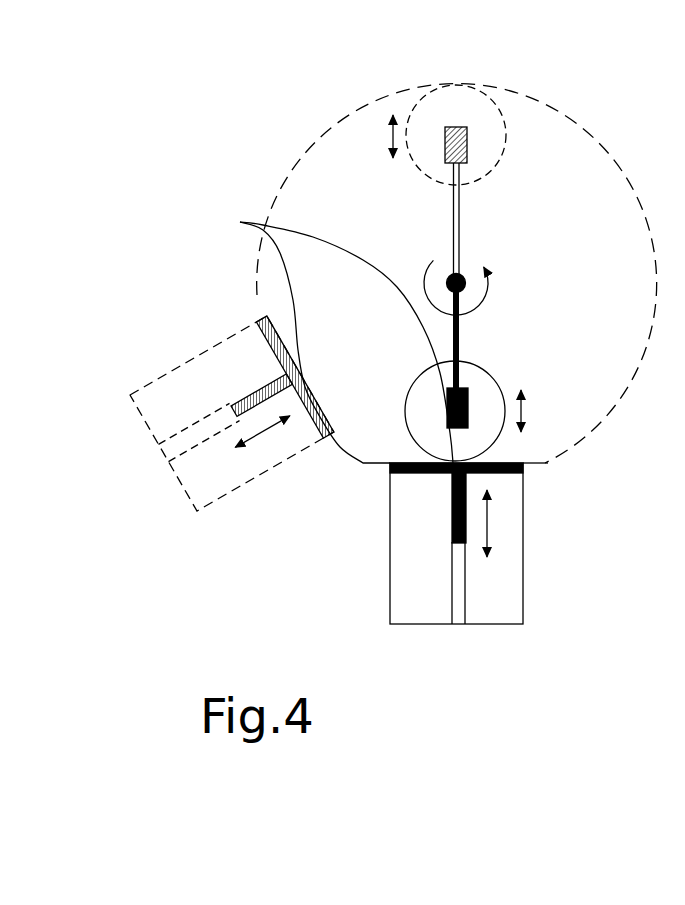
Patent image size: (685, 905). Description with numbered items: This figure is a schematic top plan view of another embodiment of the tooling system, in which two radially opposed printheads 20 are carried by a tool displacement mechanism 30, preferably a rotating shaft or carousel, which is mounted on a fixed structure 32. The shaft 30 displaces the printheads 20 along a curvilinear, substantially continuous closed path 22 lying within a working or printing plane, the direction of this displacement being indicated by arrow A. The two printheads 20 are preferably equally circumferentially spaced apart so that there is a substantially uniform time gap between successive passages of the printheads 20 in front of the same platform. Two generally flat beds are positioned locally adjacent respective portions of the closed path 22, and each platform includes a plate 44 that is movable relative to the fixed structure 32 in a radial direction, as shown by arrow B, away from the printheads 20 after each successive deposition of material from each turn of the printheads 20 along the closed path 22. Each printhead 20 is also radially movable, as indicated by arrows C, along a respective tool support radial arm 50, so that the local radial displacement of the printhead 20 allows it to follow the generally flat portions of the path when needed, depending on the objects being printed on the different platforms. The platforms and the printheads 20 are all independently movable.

The printhead 20 is at (510, 125).
The closed path 22 is at (290, 173).
The tool displacement mechanism 30 is at (463, 276).
The fixed structure 32 is at (255, 470).
The plate 44 is at (277, 357).
The tool support radial arm 50 is at (460, 215).
The arrow A is at (422, 289).
The arrow B is at (253, 442).
The arrow C is at (385, 132).